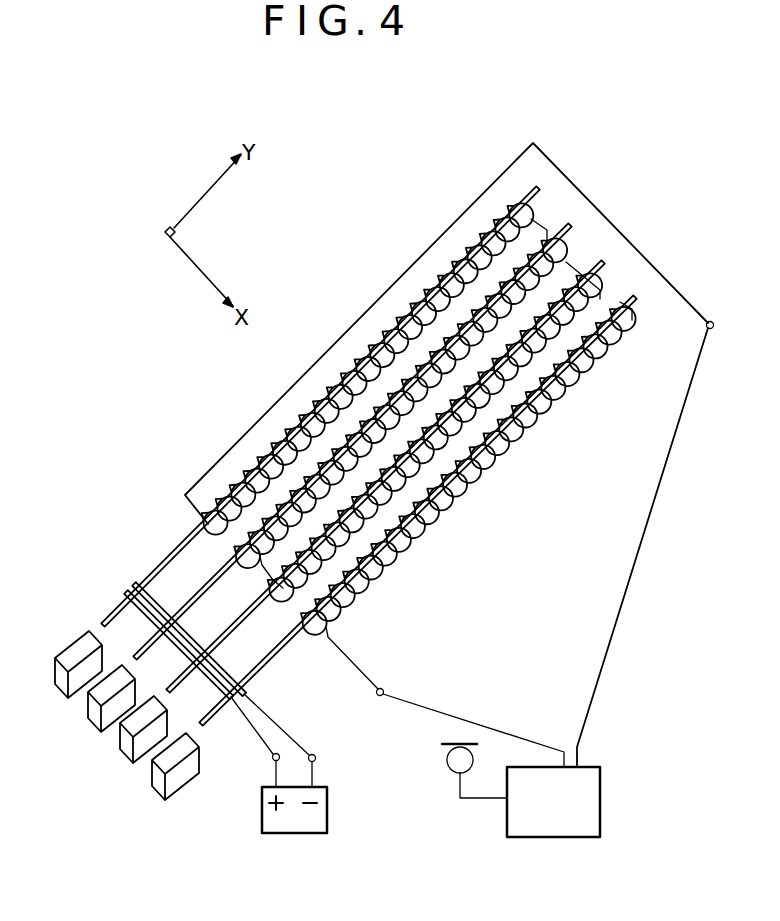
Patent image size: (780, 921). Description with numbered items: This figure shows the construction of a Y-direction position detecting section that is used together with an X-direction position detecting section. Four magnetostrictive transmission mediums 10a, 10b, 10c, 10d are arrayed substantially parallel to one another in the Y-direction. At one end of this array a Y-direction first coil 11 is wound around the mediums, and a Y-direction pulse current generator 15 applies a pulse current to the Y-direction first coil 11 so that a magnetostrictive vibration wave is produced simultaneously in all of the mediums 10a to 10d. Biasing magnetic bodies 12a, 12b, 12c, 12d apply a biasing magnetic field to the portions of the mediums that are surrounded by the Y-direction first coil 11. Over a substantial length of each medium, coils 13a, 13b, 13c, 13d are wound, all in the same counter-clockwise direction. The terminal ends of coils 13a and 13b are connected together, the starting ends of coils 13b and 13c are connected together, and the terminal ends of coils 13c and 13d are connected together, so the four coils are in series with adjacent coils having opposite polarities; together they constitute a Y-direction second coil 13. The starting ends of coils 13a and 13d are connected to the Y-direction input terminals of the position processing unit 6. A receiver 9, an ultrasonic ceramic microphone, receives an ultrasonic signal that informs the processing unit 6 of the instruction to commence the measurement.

The position processing unit 6 is at (600, 804).
The receiver 9 is at (449, 772).
The magnetostrictive transmission medium 10a is at (262, 658).
The magnetostrictive transmission medium 10b is at (250, 612).
The magnetostrictive transmission medium 10c is at (228, 573).
The magnetostrictive transmission medium 10d is at (160, 568).
The Y-direction first coil 11 is at (126, 586).
The biasing magnetic body 12a is at (165, 800).
The biasing magnetic body 12b is at (133, 763).
The biasing magnetic body 12c is at (101, 732).
The biasing magnetic body 12d is at (55, 686).
The Y-direction second coil 13 is at (428, 426).
The coil 13a is at (372, 588).
The coil 13b is at (290, 590).
The coil 13c is at (250, 538).
The coil 13d is at (320, 398).
The Y-direction pulse current generator 15 is at (327, 804).